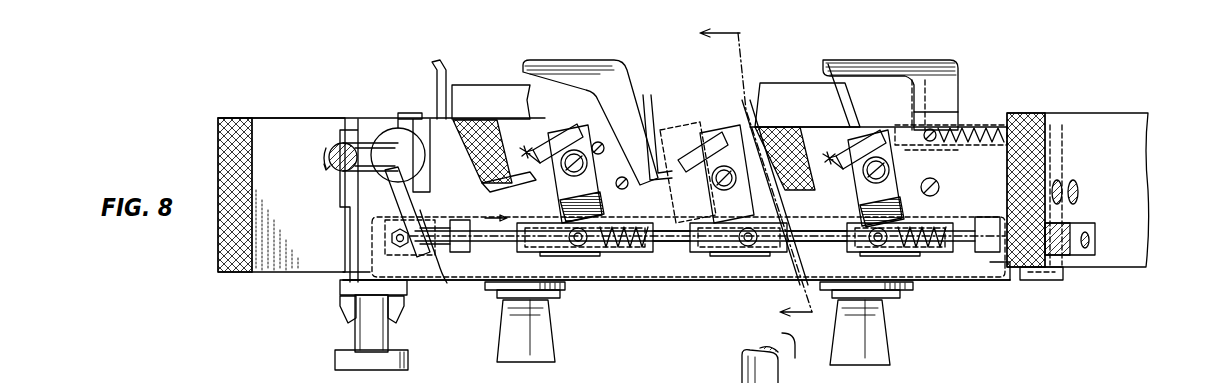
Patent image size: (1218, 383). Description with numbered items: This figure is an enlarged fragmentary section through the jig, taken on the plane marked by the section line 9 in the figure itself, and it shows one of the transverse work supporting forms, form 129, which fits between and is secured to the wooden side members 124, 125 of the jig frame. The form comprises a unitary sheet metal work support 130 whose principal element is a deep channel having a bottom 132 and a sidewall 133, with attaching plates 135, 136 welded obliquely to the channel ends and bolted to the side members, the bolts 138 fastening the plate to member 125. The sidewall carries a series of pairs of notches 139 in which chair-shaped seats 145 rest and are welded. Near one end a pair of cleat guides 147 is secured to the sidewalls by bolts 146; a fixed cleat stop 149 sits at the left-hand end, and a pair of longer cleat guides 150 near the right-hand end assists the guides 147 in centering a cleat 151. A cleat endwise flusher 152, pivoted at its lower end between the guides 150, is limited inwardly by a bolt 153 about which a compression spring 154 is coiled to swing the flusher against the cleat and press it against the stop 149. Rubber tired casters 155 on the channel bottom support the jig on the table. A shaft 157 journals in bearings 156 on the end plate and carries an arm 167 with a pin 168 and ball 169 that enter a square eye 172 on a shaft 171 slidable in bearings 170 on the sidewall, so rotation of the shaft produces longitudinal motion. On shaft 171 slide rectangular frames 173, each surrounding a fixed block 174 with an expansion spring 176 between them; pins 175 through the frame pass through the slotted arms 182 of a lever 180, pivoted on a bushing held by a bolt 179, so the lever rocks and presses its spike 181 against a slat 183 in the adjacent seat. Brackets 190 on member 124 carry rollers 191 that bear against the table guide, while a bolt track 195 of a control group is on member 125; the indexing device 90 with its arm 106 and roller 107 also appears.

The section line 9- 9 is at (759, 173).
The longitudinal indexing device 90 is at (662, 382).
The arm 106 is at (591, 378).
The roller 107 is at (542, 376).
The side member 124 is at (283, 137).
The side member 125 is at (1140, 243).
The work support form 129 is at (712, 291).
The work support 130 is at (944, 278).
The bottom 132 is at (984, 282).
The sidewall 133 is at (1000, 268).
The attaching plate 135 is at (352, 237).
The attaching plate 136 is at (1045, 282).
The bolts 138 is at (1074, 180).
The notches 139 is at (692, 150).
The chair-shaped seat 145 is at (655, 130).
The bolts 146 is at (600, 154).
The cleat guide 147 is at (612, 70).
The cleat stop 149 is at (436, 78).
The cleat guide 150 is at (906, 62).
The cleat 151 is at (473, 92).
The cleat endwise flusher 152 is at (925, 102).
The bolt 153 is at (980, 125).
The compression spring 154 is at (950, 165).
The caster 155 is at (515, 340).
The bearing 156 is at (430, 154).
The shaft 157 is at (340, 165).
The arm 167 is at (364, 197).
The pin 168 is at (395, 240).
The ball 169 is at (445, 285).
The bearing 170 is at (460, 222).
The shaft 171 is at (966, 247).
The square eye 172 is at (435, 228).
The rectangular frame 173 is at (615, 252).
The block 174 is at (545, 256).
The pin 175 is at (578, 248).
The expansion spring 176 is at (665, 252).
The bolt 179 is at (888, 176).
The lever 180 is at (560, 200).
The spike 181 is at (568, 130).
The slotted arm 182 is at (612, 205).
The slat 183 is at (508, 128).
The bracket 190 is at (342, 318).
The roller 191 is at (345, 358).
The bolt track 195 is at (1083, 256).